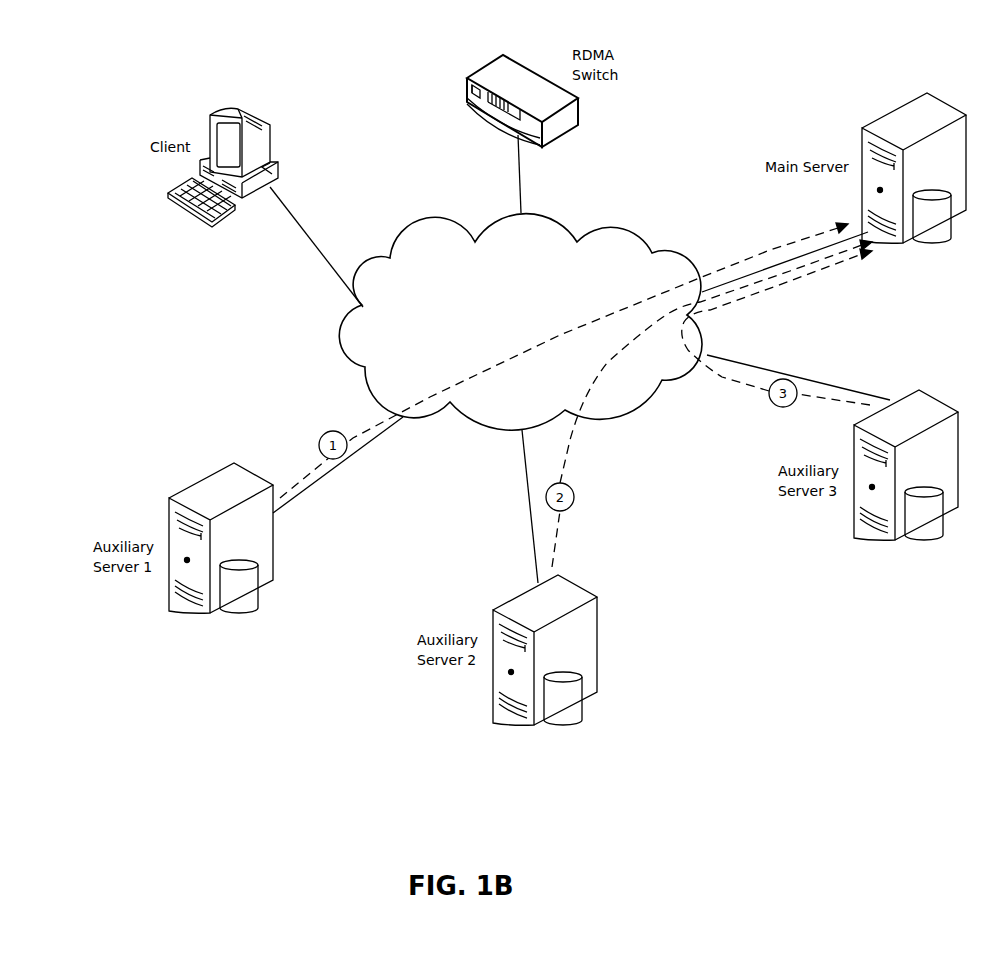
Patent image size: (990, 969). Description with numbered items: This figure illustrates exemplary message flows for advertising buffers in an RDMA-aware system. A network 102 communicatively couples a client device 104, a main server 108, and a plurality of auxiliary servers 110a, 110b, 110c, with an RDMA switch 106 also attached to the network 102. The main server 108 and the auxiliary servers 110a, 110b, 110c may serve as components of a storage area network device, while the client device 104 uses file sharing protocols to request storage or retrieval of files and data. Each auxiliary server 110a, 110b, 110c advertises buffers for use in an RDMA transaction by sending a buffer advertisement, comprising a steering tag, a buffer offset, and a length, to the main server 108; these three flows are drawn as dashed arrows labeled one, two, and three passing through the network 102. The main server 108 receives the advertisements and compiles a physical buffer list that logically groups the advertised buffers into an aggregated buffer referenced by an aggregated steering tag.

The network 102 is at (520, 322).
The client device 104 is at (211, 114).
The RDMA switch 106 is at (486, 62).
The main server 108 is at (886, 109).
The auxiliary server 110a is at (213, 474).
The auxiliary server 110b is at (512, 573).
The auxiliary server 110c is at (905, 370).